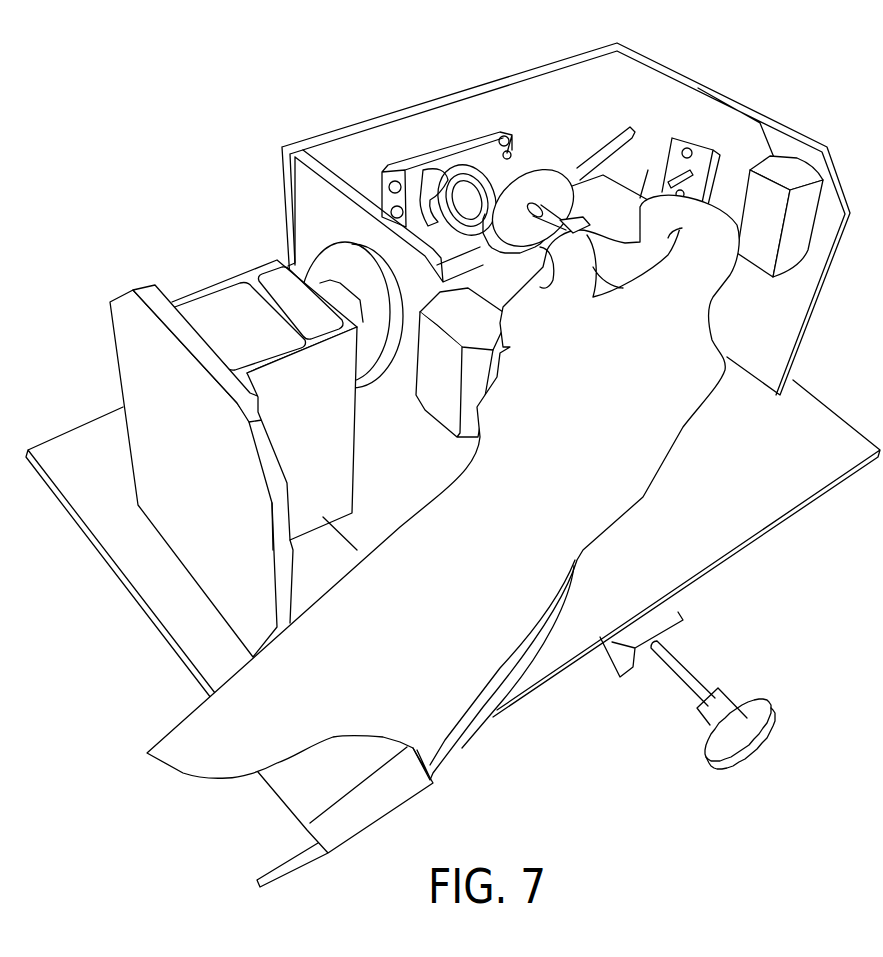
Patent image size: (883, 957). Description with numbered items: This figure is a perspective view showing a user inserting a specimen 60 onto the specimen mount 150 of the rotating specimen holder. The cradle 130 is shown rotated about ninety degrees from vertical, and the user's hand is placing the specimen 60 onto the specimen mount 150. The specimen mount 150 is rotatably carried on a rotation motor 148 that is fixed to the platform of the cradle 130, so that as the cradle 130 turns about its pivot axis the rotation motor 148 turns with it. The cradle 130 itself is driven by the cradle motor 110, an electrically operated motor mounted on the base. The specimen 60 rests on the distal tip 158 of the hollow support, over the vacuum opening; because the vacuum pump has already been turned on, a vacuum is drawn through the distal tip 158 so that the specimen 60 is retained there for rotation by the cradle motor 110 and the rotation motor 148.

The cradle motor 110 is at (208, 300).
The cradle 130 is at (320, 132).
The rotation motor 148 is at (437, 168).
The specimen mount 150 is at (436, 166).
The distal tip 158 is at (565, 226).
The specimen 60 is at (578, 228).